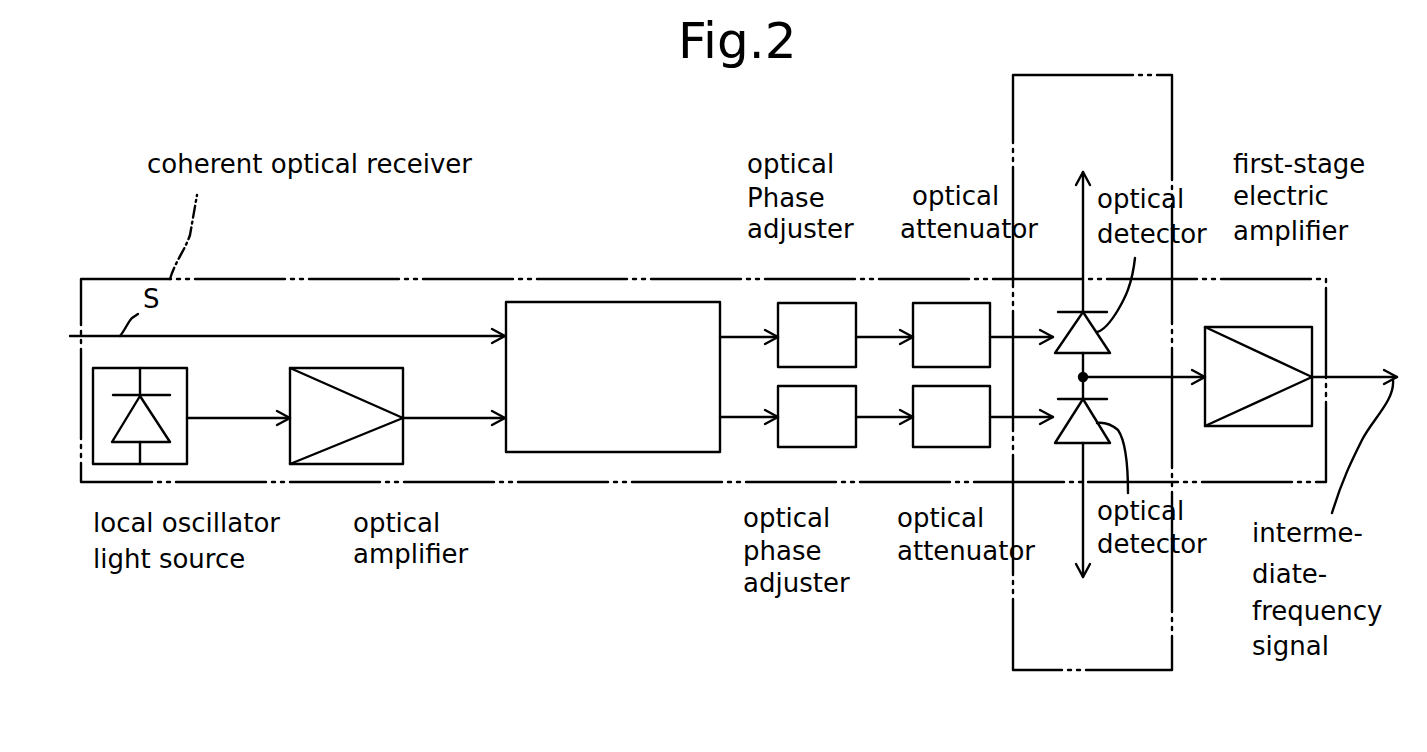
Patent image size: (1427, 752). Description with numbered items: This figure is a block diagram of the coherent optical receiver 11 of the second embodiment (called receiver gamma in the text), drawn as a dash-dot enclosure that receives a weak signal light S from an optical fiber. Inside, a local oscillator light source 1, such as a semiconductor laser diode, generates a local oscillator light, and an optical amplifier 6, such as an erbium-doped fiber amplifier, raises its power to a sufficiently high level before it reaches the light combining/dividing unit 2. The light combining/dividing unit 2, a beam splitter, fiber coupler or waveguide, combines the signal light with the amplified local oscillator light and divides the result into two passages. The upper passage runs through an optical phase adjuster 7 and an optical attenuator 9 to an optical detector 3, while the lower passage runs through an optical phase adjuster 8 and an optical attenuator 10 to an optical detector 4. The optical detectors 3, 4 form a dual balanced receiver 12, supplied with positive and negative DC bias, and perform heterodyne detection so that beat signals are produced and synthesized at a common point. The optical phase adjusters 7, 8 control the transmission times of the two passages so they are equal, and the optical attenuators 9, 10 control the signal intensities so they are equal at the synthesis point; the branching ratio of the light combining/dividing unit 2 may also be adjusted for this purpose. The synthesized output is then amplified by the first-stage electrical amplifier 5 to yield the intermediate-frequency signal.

The local oscillator light source 1 is at (122, 464).
The light combining/dividing unit 2 is at (562, 302).
The optical detector 3 is at (1082, 333).
The optical detector 4 is at (1082, 422).
The first-stage electrical amplifier 5 is at (1255, 325).
The optical amplifier 6 is at (347, 464).
The optical phase adjuster 7 is at (793, 252).
The optical phase adjuster 8 is at (790, 505).
The optical attenuator 9 is at (950, 252).
The optical attenuator 10 is at (932, 505).
The coherent optical receiver 11 is at (302, 279).
The dual balanced receiver 12 is at (1078, 73).